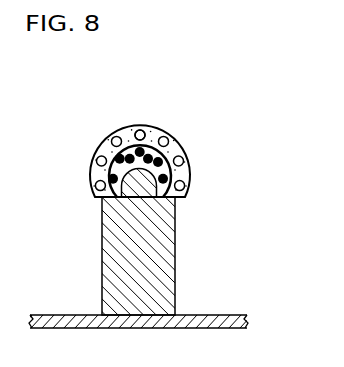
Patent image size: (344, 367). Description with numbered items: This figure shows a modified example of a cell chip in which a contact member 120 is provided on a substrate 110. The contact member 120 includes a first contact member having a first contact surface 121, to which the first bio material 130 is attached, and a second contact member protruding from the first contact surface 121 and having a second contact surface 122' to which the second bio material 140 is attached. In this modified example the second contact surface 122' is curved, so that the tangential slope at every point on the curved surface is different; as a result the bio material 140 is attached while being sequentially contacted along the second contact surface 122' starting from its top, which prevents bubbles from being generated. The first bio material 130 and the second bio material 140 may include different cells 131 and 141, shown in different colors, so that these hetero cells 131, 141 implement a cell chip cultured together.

The substrate 110 is at (70, 315).
The contact member 120 is at (206, 270).
The first contact surface 121 is at (186, 198).
The second contact surface 122' is at (80, 183).
The first bio material 130 is at (101, 147).
The cell 131 is at (140, 129).
The second bio material 140 is at (189, 172).
The cell 141 is at (179, 146).